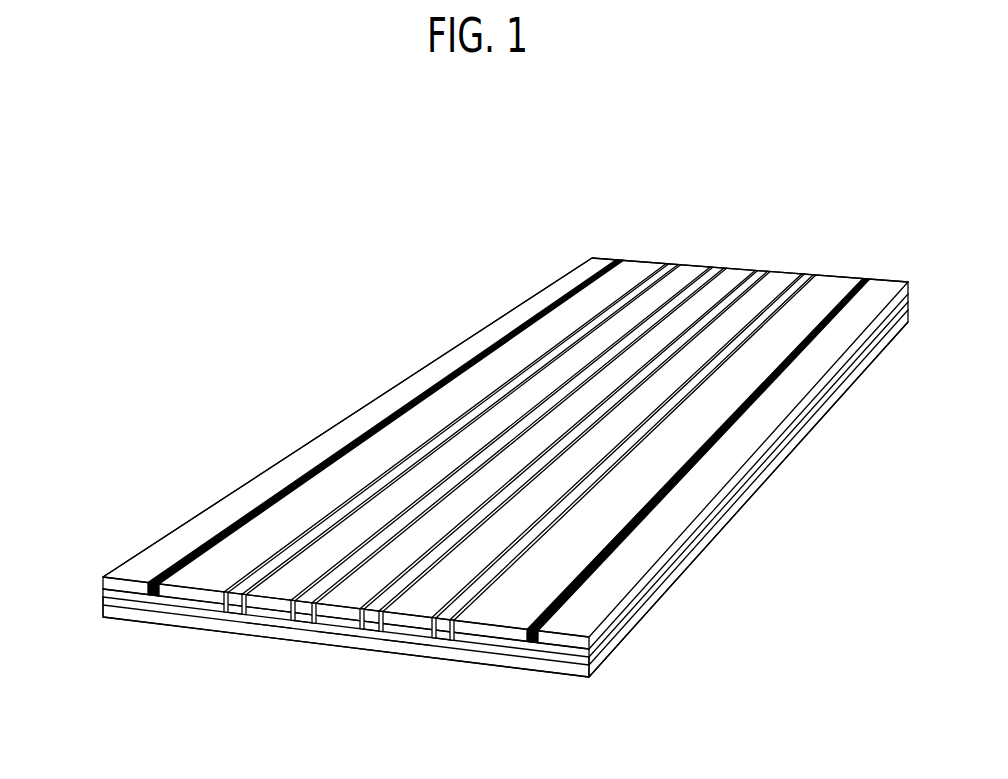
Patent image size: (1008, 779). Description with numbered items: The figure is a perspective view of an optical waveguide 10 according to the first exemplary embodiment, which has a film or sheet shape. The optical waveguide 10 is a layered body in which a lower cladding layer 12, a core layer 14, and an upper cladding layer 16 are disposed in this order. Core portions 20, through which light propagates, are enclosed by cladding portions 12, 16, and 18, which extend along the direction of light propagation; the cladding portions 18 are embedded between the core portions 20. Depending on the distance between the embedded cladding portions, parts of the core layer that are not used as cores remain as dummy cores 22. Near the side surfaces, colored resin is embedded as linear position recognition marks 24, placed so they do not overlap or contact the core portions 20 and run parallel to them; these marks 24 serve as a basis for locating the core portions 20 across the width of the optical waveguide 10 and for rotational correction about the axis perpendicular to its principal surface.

The optical waveguide 10 is at (337, 322).
The lower cladding layer 12 is at (103, 613).
The core layer 14 is at (103, 597).
The upper cladding layer 16 is at (103, 578).
The cladding portion 18 is at (224, 613).
The core portion 20 is at (233, 620).
The dummy core 22 is at (272, 620).
The position recognition mark 24 is at (197, 553).